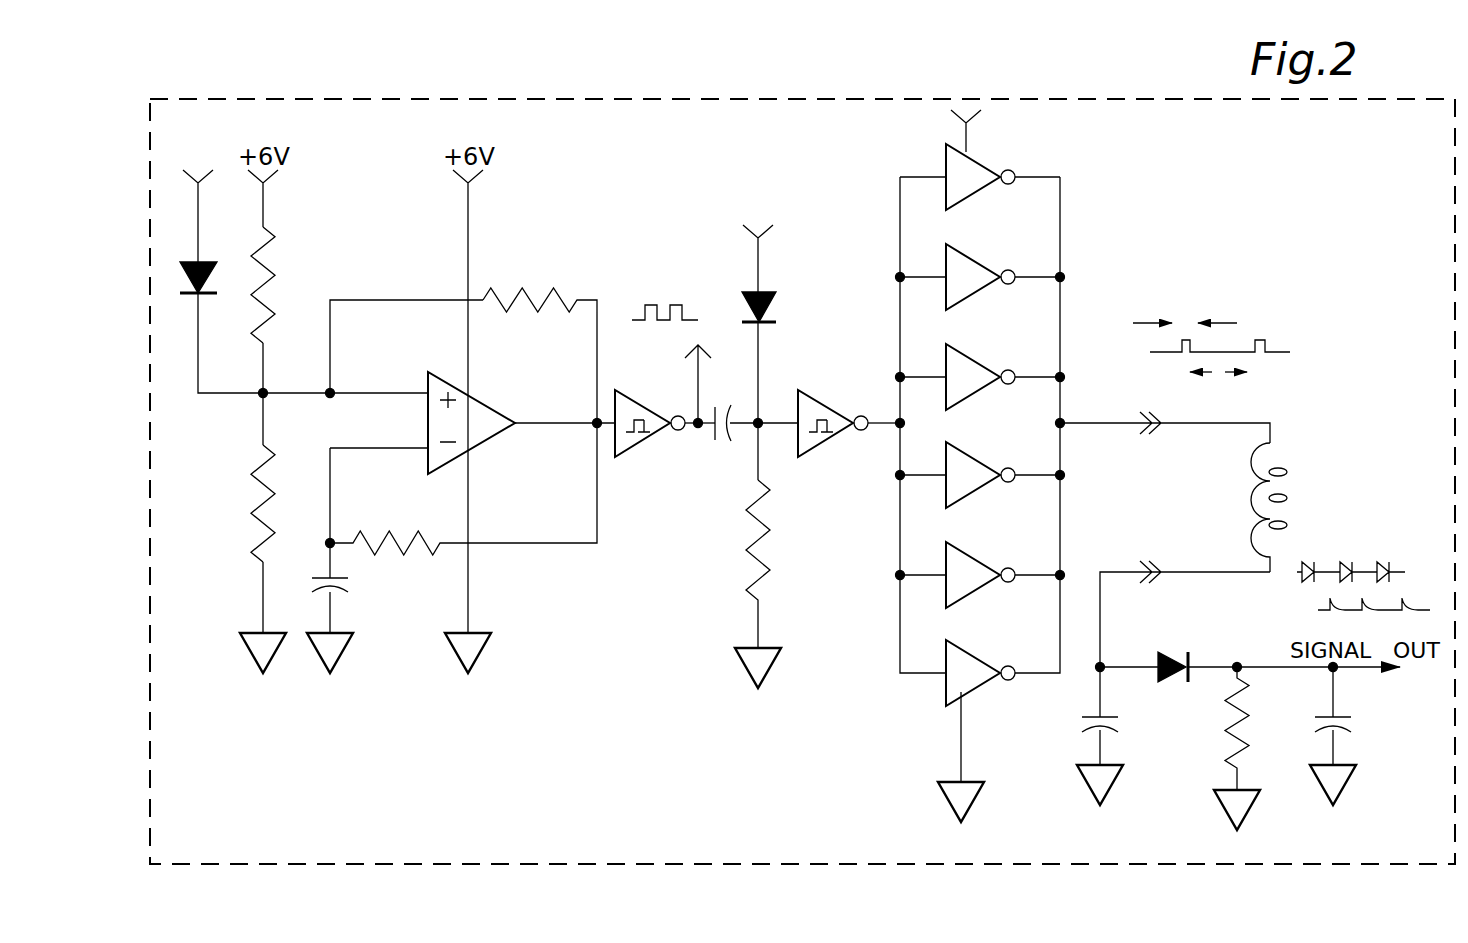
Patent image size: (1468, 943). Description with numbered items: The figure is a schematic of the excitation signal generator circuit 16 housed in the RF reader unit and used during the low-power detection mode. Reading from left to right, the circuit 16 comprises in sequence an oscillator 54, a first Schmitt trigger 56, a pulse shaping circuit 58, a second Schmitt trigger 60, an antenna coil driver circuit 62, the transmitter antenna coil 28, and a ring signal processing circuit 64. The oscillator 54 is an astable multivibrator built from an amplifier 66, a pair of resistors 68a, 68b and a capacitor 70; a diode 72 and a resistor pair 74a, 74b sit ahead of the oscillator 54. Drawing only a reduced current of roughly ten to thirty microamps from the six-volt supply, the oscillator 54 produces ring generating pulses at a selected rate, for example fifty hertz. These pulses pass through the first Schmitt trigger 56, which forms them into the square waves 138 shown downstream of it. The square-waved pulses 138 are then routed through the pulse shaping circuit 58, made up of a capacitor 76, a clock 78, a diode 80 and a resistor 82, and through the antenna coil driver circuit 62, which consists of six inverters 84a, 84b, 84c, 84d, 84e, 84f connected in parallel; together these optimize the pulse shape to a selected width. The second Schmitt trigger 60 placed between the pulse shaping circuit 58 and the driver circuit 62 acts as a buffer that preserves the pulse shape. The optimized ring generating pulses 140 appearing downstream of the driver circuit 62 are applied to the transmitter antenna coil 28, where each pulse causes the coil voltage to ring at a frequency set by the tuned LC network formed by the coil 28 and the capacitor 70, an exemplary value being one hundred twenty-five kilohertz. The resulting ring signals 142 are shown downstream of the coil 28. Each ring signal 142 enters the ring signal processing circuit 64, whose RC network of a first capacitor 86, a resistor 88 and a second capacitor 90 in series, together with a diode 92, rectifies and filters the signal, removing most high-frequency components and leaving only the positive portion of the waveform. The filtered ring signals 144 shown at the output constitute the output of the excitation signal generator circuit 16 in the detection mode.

The excitation signal generator circuit 16 is at (1090, 92).
The transmitter antenna coil 28 is at (1290, 500).
The oscillator 54 is at (580, 220).
The first Schmitt trigger 56 is at (633, 440).
The pulse shaping circuit 58 is at (713, 637).
The second Schmitt trigger 60 is at (818, 405).
The antenna coil driver circuit 62 is at (1043, 465).
The ring signal processing circuit 64 is at (1305, 802).
The amplifier 66 is at (488, 393).
The resistor 68a is at (543, 290).
The resistor 68b is at (380, 535).
The capacitor 70 is at (350, 595).
The diode 72 is at (200, 262).
The resistor 74a is at (270, 258).
The resistor 74b is at (256, 505).
The capacitor 76 is at (720, 450).
The clock 78 is at (760, 195).
The diode 80 is at (762, 292).
The resistor 82 is at (758, 540).
The inverter 84a is at (960, 190).
The inverter 84b is at (960, 290).
The inverter 84c is at (960, 390).
The inverter 84d is at (958, 488).
The inverter 84e is at (958, 590).
The inverter 84f is at (958, 688).
The first capacitor 86 is at (1120, 730).
The resistor 88 is at (1232, 712).
The second capacitor 90 is at (1318, 730).
The diode 92 is at (1175, 655).
The square waves 138 is at (648, 318).
The optimized ring generating pulses 140 is at (1238, 352).
The ring signals 142 is at (1318, 570).
The filtered ring signals 144 is at (1405, 608).